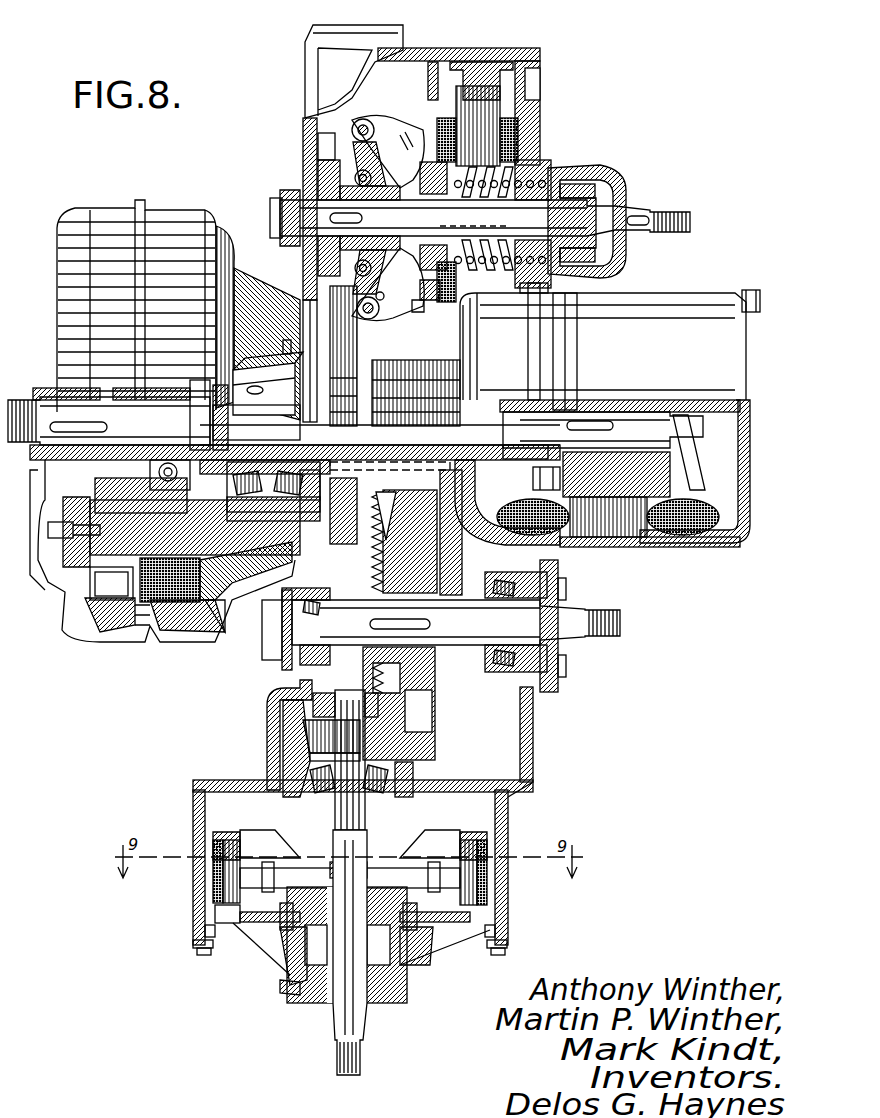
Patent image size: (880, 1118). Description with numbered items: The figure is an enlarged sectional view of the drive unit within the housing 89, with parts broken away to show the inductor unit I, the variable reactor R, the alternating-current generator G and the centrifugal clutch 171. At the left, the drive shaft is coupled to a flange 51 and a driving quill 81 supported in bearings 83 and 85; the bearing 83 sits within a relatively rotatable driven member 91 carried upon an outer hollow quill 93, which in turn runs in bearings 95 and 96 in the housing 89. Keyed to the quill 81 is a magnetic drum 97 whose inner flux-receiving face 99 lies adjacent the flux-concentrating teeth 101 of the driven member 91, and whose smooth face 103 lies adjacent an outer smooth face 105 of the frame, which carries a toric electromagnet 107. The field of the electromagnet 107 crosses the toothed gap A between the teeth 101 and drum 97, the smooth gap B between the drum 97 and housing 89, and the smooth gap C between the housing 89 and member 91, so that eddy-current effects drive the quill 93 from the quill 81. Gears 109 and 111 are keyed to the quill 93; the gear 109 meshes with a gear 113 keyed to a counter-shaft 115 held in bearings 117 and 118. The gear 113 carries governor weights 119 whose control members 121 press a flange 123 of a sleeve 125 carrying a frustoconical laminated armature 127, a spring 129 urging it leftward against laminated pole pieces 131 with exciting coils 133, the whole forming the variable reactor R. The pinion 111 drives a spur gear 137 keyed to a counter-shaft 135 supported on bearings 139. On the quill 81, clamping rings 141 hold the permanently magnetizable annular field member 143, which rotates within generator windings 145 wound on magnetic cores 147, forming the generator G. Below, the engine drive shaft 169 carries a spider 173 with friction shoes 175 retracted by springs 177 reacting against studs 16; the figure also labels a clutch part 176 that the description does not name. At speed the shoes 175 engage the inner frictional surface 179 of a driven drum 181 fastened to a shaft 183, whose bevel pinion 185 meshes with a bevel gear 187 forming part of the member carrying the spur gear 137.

The variable reactor R is at (558, 56).
The inductor unit I is at (50, 211).
The alternating-current generator G is at (704, 283).
The toothed flux gap A is at (100, 590).
The smooth flux gap B is at (160, 635).
The smooth flux gap C is at (240, 587).
The gear 113 is at (320, 142).
The governor weights 119 is at (395, 125).
The control members 121 is at (325, 170).
The bearing 117 is at (296, 188).
The counter-shaft 115 is at (420, 232).
The magnetic pole pieces 131 is at (485, 136).
The exciting coils 133 is at (505, 172).
The spring 129 is at (505, 185).
The bearing 118 is at (582, 186).
The laminated iron armature 127 is at (432, 282).
The sleeve 125 is at (418, 304).
The flange 123 is at (382, 299).
The gear 109 is at (340, 350).
The pinion 111 is at (405, 366).
The driving quill 81 is at (213, 427).
The bearing 83 is at (167, 466).
The hollow quill 93 is at (216, 456).
The bearing 95 is at (283, 467).
The flange 51 is at (53, 494).
The driven member 91 is at (103, 525).
The housing 89 is at (220, 567).
The flux-concentrating teeth 101 is at (100, 590).
The magnetic drum 97 is at (110, 627).
The flux-receiving face 99 is at (127, 630).
The smooth face 103 is at (173, 617).
The smooth face 105 is at (203, 617).
The electromagnet 107 is at (207, 620).
The bevel gear 187 is at (373, 560).
The bearing 96 is at (465, 482).
The counter-shaft 135 is at (563, 632).
The bearings 139 is at (320, 597).
The spur gear 137 is at (425, 763).
The bevel pinion 185 is at (313, 743).
The shaft 183 is at (283, 777).
The annular field member 143 is at (687, 527).
The bearing 85 is at (513, 443).
The clamping rings 141 is at (670, 462).
The magnetic cores 147 is at (613, 525).
The generator windings 145 is at (727, 513).
The centrifugal clutch 171 is at (522, 839).
The friction shoes 175 is at (213, 847).
The driven drum 181 is at (210, 897).
The studs 16 is at (217, 883).
The spring 177 is at (273, 867).
The hub 176 is at (257, 887).
The inner frictional surface 179 is at (207, 927).
The spider 173 is at (250, 887).
The drive shaft 169 is at (340, 1020).